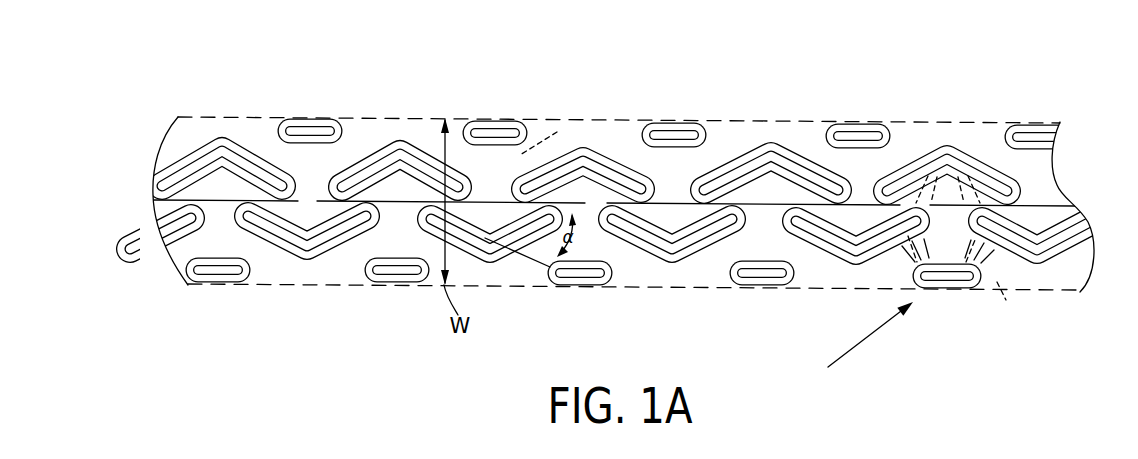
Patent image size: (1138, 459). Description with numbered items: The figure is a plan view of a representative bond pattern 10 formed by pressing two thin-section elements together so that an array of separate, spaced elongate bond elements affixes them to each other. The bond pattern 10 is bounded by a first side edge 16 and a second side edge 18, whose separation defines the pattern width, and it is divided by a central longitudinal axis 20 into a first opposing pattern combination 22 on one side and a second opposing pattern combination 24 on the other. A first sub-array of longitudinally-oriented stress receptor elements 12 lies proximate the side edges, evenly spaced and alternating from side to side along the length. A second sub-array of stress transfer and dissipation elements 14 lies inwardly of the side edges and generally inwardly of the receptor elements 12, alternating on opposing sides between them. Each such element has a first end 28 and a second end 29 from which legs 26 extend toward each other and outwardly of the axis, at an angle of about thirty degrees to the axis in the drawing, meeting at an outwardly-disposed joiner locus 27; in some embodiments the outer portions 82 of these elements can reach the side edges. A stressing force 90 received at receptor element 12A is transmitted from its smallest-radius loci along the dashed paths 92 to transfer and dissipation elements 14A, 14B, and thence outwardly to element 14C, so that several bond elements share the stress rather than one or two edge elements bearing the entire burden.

The bond pattern 10 is at (359, 84).
The stress receptor elements 12 is at (225, 284).
The receptor element 12A is at (973, 288).
The stress transfer and dissipation elements 14 is at (672, 264).
The transfer and dissipation element 14A is at (825, 254).
The transfer and dissipation element 14B is at (1058, 258).
The transfer and dissipation element 14C is at (968, 150).
The first side edge 16 is at (752, 119).
The second side edge 18 is at (520, 290).
The central longitudinal axis 20 is at (557, 132).
The first opposing pattern combination 22 is at (905, 128).
The second opposing pattern combination 24 is at (272, 265).
The legs 26 is at (267, 150).
The joiner locus 27 is at (404, 140).
The first end 28 is at (692, 194).
The second end 29 is at (852, 188).
The outer portions 82 is at (330, 262).
The stressing force 90 is at (855, 350).
The paths 92 is at (994, 267).